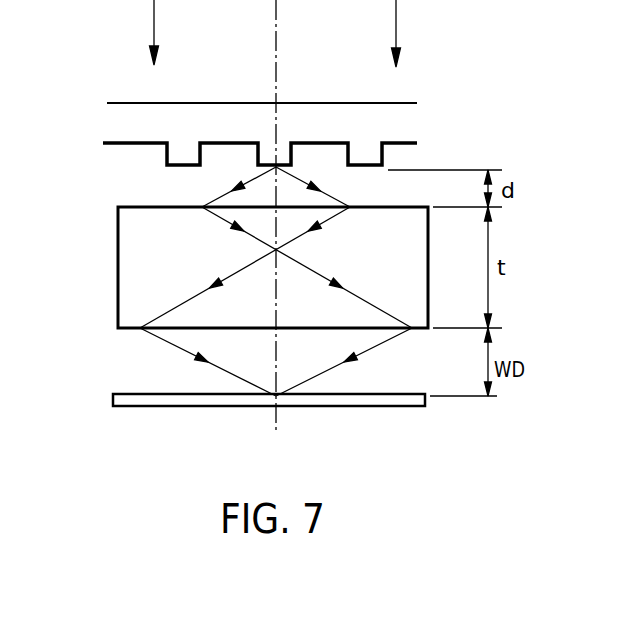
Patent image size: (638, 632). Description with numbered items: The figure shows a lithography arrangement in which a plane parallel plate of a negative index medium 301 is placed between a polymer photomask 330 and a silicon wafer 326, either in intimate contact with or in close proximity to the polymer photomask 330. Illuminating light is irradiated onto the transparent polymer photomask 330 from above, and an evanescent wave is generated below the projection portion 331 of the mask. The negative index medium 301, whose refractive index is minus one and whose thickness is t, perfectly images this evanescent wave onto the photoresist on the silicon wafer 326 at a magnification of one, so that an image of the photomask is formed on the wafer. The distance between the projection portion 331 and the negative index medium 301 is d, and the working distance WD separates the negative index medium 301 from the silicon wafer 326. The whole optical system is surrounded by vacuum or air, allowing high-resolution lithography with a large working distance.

The polymer photomask 330 is at (120, 103).
The projection portion 331 is at (363, 165).
The negative index medium 301 is at (138, 285).
The silicon wafer 326 is at (115, 399).